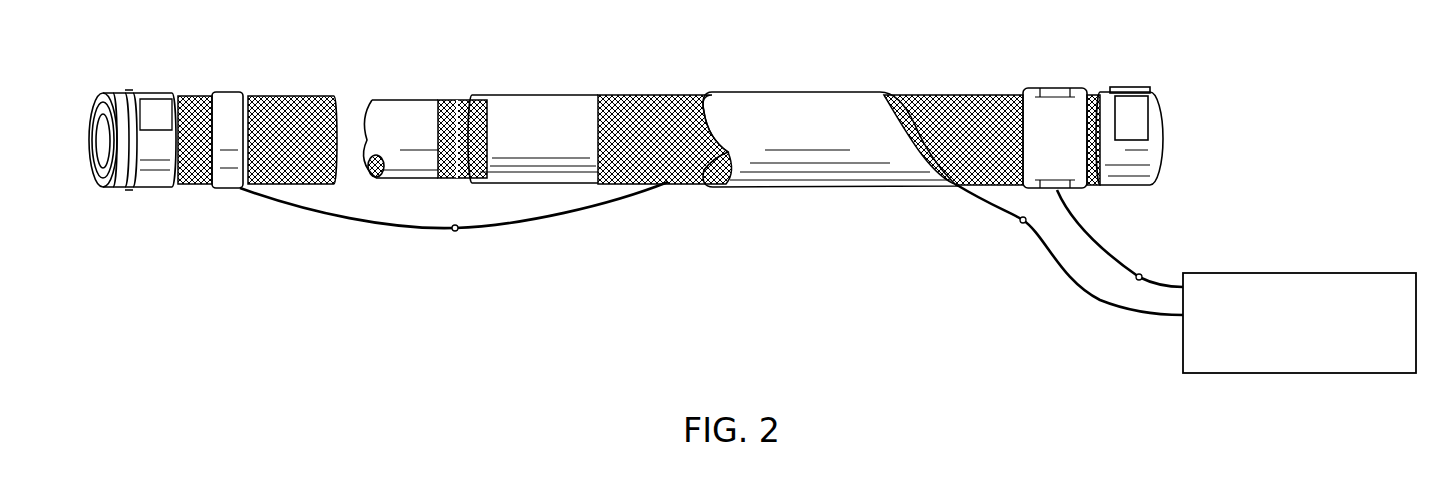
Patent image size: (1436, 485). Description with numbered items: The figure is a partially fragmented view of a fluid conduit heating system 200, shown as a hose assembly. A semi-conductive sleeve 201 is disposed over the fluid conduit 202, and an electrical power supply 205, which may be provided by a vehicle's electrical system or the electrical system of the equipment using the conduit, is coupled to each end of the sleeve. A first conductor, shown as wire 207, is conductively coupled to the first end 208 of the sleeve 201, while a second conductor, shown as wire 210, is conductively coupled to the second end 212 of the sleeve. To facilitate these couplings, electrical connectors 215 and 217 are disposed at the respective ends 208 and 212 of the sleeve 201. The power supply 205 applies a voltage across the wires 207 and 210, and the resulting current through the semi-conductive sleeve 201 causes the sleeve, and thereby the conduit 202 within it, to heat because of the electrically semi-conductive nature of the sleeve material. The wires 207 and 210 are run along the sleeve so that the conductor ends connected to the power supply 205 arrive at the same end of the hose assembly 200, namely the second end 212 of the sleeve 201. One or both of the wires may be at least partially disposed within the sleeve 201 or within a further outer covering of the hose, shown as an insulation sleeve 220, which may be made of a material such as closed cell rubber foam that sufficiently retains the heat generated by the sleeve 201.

The fluid conduit heating system 200 is at (752, 208).
The semi-conductive sleeve 201 is at (663, 85).
The fluid conduit 202 is at (568, 100).
The electrical power supply 205 is at (1305, 272).
The wire 207 is at (457, 231).
The first end 208 is at (248, 80).
The wire 210 is at (1137, 282).
The second end 212 is at (1021, 85).
The electrical connector 215 is at (212, 190).
The electrical connector 217 is at (1060, 194).
The insulation sleeve 220 is at (812, 196).